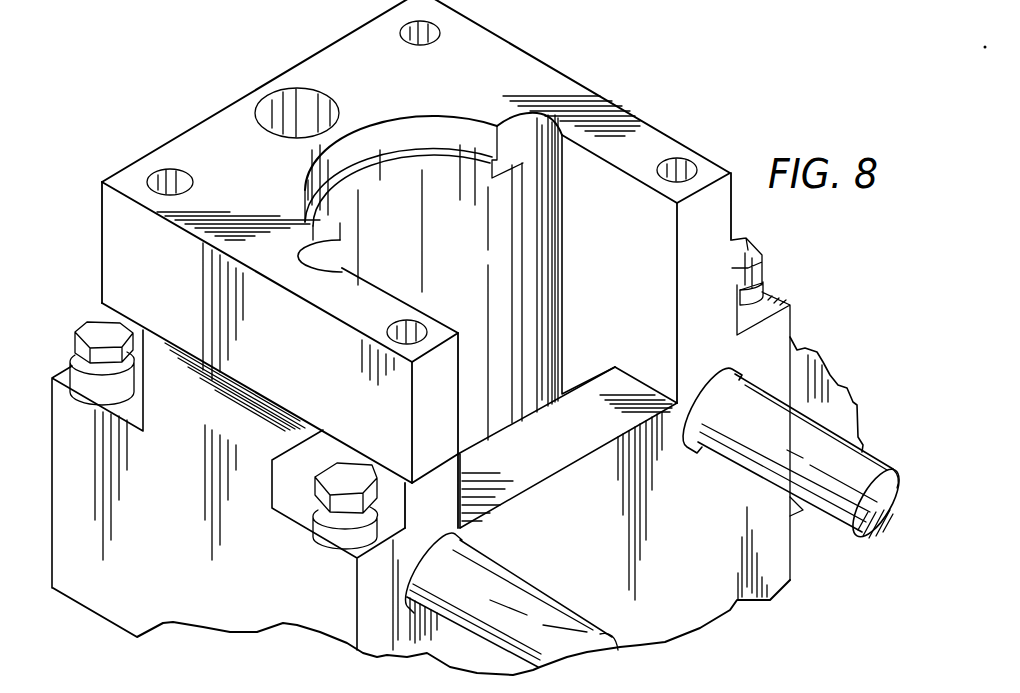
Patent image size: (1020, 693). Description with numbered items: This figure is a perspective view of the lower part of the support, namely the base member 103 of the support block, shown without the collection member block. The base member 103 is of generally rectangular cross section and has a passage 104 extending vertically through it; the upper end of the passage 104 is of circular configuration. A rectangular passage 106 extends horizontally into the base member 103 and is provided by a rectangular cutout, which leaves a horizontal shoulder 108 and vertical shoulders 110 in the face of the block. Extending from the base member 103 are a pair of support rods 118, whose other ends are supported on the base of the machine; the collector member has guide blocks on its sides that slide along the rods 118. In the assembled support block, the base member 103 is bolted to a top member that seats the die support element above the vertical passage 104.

The base member 103 is at (457, 337).
The passage 104 is at (455, 124).
The rectangular passage 106 is at (622, 321).
The horizontal shoulder 108 is at (568, 460).
The vertical shoulders 110 is at (658, 367).
The support rods 118 is at (853, 477).